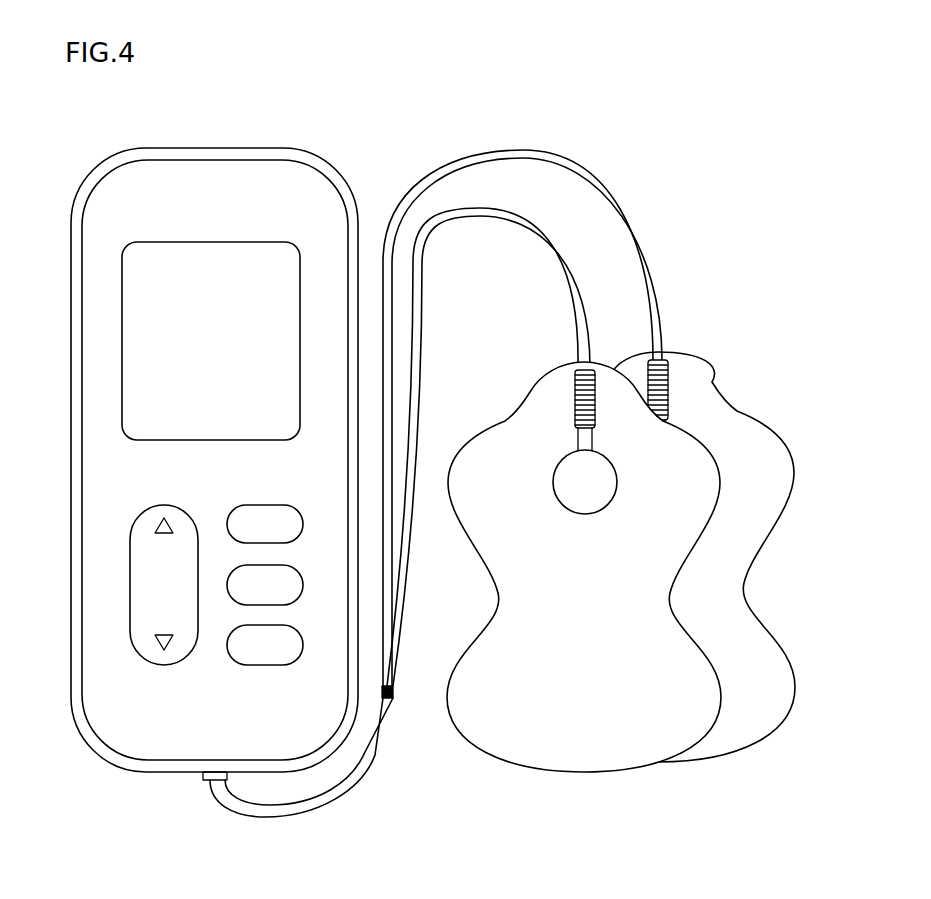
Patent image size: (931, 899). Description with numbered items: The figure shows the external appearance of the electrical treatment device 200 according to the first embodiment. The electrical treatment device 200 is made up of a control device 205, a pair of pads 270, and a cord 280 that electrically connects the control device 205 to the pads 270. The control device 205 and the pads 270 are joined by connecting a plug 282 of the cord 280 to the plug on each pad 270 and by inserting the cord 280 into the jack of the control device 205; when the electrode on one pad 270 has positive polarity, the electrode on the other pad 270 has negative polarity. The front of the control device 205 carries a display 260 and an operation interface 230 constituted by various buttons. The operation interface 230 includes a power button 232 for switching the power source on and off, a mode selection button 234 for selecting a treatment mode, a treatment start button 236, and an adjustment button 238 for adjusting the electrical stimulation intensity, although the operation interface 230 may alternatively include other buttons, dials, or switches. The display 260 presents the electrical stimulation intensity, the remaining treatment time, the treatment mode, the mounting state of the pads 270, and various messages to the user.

The electrical treatment device 200 is at (406, 93).
The control device 205 is at (237, 148).
The display 260 is at (237, 244).
The operation interface 230 is at (303, 678).
The power button 232 is at (283, 505).
The mode selection button 234 is at (283, 565).
The treatment start button 236 is at (283, 625).
The adjustment button 238 is at (161, 505).
The cord 280 is at (297, 817).
The pad 270 is at (643, 768).
The plug 282 is at (585, 514).